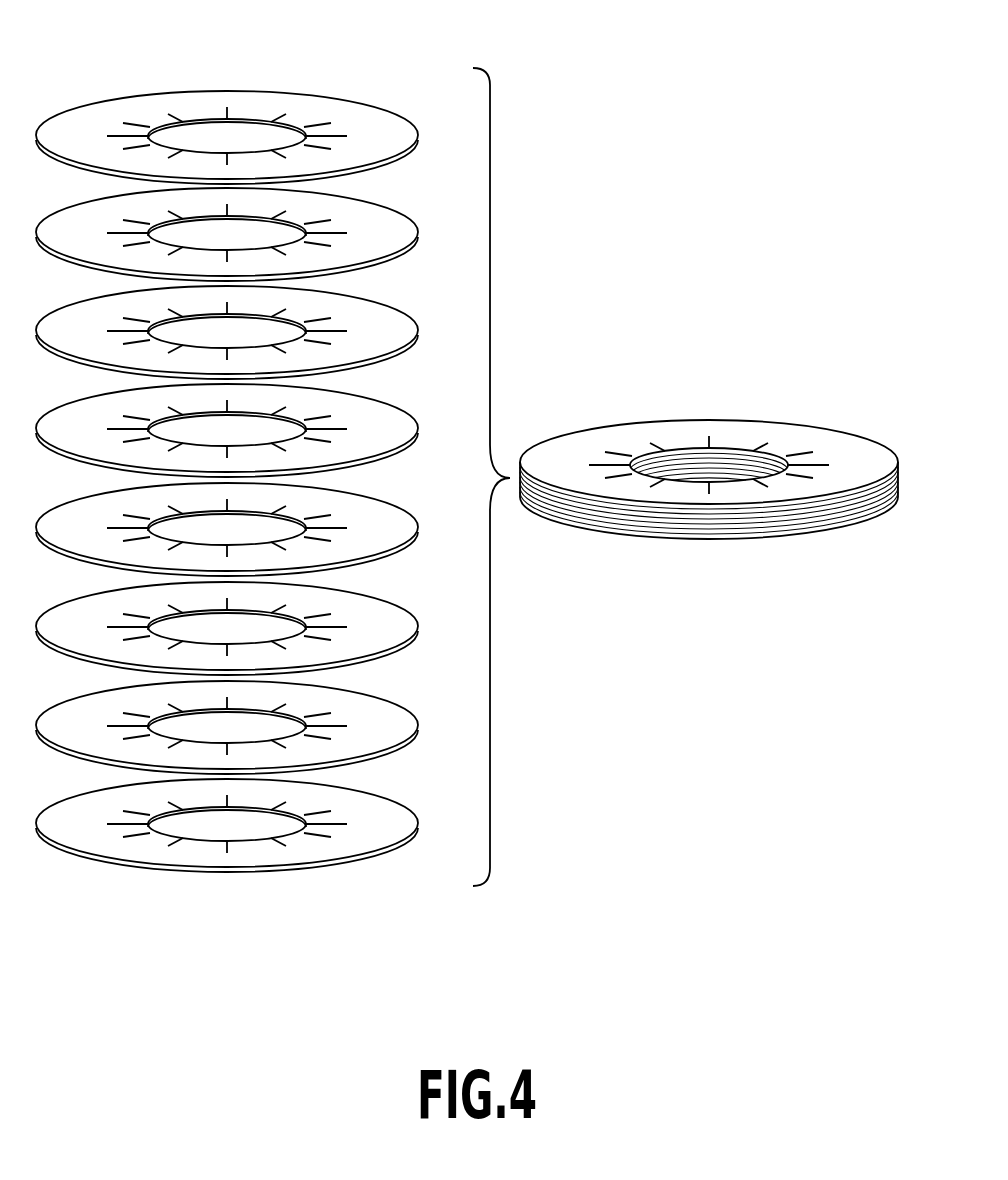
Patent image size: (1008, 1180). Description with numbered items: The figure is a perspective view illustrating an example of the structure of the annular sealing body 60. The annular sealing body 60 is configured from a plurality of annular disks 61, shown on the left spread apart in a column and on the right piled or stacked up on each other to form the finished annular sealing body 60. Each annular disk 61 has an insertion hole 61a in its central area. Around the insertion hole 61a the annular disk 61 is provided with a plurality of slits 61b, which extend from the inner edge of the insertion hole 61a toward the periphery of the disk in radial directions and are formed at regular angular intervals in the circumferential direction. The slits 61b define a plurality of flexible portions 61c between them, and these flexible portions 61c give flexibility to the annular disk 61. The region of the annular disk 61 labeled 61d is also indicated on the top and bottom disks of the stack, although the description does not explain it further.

The annular sealing body 60 is at (762, 420).
The annular disk 61 is at (316, 481).
The insertion hole 61a is at (184, 124).
The slits 61b is at (285, 118).
The flexible portions 61c is at (127, 133).
The sheet surface 61d is at (383, 132).